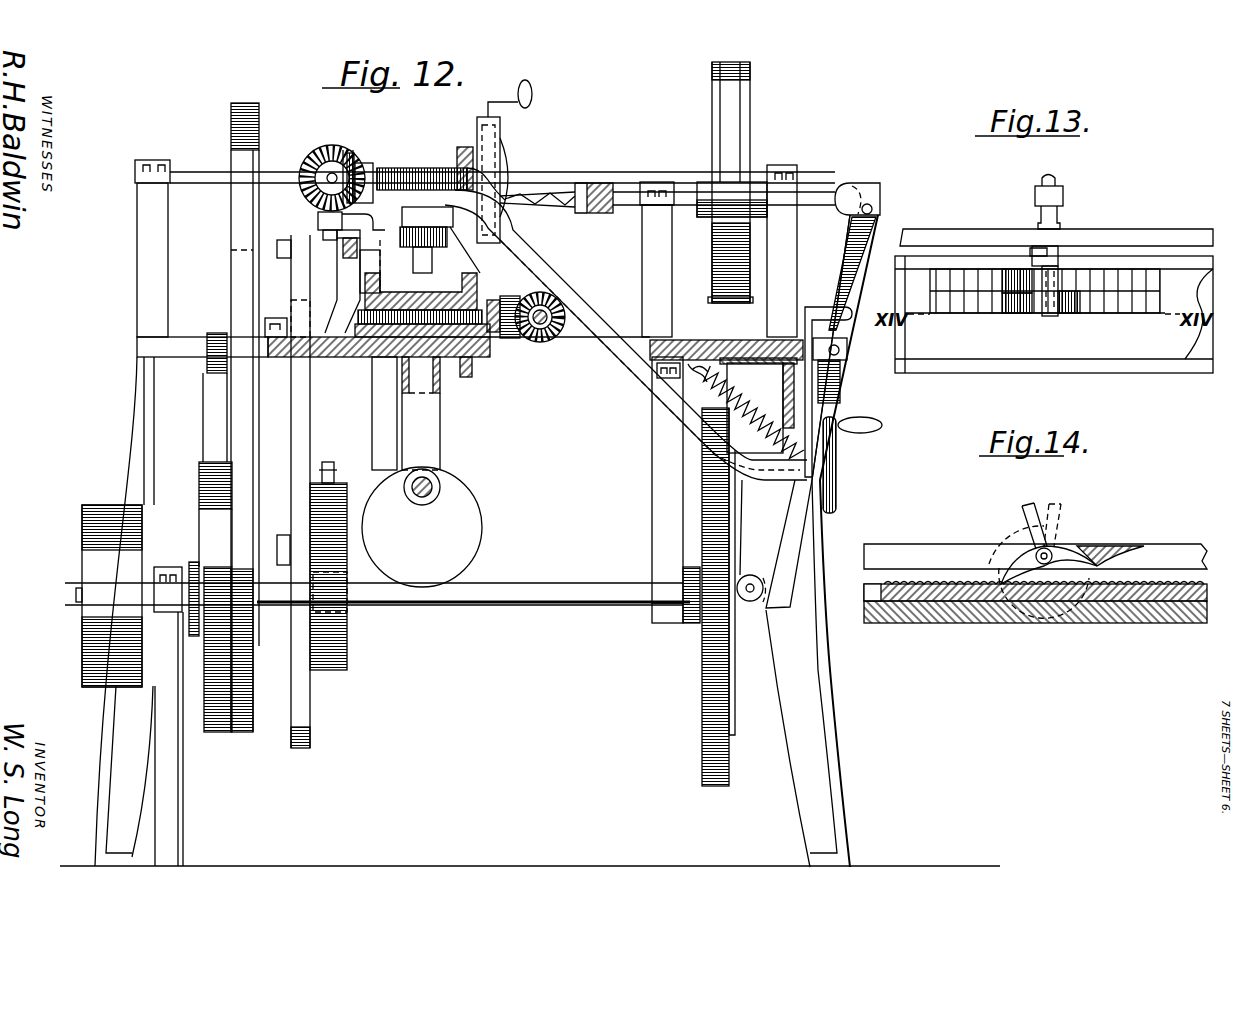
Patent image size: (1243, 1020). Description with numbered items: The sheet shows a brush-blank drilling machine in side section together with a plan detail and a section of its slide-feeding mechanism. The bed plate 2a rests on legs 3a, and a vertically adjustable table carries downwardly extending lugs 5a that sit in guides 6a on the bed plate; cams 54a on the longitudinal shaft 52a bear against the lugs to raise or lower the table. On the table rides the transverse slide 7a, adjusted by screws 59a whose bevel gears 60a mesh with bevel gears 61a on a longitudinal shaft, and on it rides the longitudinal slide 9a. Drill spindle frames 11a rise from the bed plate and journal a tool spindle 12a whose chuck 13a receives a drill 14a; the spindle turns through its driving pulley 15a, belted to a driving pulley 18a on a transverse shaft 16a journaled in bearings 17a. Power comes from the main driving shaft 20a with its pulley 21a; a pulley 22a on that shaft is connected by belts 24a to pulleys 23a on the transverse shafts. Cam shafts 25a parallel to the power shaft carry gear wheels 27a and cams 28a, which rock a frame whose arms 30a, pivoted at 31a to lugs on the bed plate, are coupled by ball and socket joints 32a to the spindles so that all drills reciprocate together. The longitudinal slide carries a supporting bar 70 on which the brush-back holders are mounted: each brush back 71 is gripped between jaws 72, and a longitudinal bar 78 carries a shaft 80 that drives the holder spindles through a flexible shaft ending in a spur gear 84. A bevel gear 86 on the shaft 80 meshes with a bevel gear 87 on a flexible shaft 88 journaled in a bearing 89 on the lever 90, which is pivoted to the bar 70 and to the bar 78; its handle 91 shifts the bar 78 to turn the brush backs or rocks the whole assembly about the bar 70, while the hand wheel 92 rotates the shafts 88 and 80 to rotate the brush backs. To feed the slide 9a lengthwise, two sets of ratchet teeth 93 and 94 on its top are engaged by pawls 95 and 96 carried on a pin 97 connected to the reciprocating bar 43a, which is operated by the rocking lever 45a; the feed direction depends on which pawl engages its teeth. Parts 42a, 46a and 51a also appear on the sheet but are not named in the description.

In FIG. 12, the bed plate 2a is at (145, 350).
In FIG. 12, the legs 3a is at (132, 478).
In FIG. 12, the lugs 5a is at (432, 427).
In FIG. 12, the guides 6a is at (440, 390).
In FIG. 12, the transverse slide 7a is at (478, 287).
In FIG. 13, the transverse slide 7a is at (1113, 352).
In FIG. 14, the transverse slide 7a is at (992, 600).
In FIG. 12, the longitudinal slide 9a is at (457, 277).
In FIG. 13, the longitudinal slide 9a is at (1035, 332).
In FIG. 14, the longitudinal slide 9a is at (913, 600).
In FIG. 12, the drill spindle frames 11a is at (648, 270).
In FIG. 12, the tool spindle 12a is at (818, 210).
In FIG. 12, the chuck 13a is at (605, 213).
In FIG. 12, the drill 14a is at (545, 200).
In FIG. 12, the driving pulley 15a is at (700, 212).
In FIG. 12, the transverse shaft 16a is at (617, 163).
In FIG. 12, the bearings 17a is at (140, 268).
In FIG. 12, the driving pulley 18a is at (737, 127).
In FIG. 12, the main driving shaft 20a is at (76, 585).
In FIG. 12, the pulley 21a is at (112, 596).
In FIG. 12, the pulley 22a is at (208, 533).
In FIG. 12, the pulleys 23a is at (233, 128).
In FIG. 12, the belts 24a is at (212, 333).
In FIG. 12, the cam shafts 25a is at (517, 605).
In FIG. 12, the gear wheels 27a is at (710, 663).
In FIG. 12, the cams 28a is at (758, 520).
In FIG. 12, the arms 30a is at (843, 272).
In FIG. 12, the pivot 31a is at (840, 360).
In FIG. 12, the ball and socket joint 32a is at (847, 190).
In FIG. 12, the arm 42a is at (347, 292).
In FIG. 12, the reciprocating bar 43a is at (342, 255).
In FIG. 13, the reciprocating bar 43a is at (1125, 222).
In FIG. 14, the reciprocating bar 43a is at (943, 538).
In FIG. 12, the rocking lever 45a is at (310, 430).
In FIG. 13, the rocking lever 45a is at (1058, 190).
In FIG. 12, the slot 46a is at (305, 327).
In FIG. 12, the bolt 51a is at (325, 470).
In FIG. 12, the longitudinal shaft 52a is at (420, 503).
In FIG. 12, the cams 54a is at (422, 527).
In FIG. 12, the screws 59a is at (490, 313).
In FIG. 12, the bevel gears 60a is at (510, 343).
In FIG. 12, the bevel gears 61a is at (545, 340).
In FIG. 12, the supporting bar 70 is at (415, 217).
In FIG. 12, the brush back 71 is at (512, 165).
In FIG. 12, the jaws 72 is at (500, 135).
In FIG. 12, the longitudinal bar 78 is at (318, 222).
In FIG. 12, the longitudinal shaft 80 is at (327, 175).
In FIG. 12, the spur gear 84 is at (465, 147).
In FIG. 12, the bevel gear 86 is at (322, 160).
In FIG. 12, the bevel gear 87 is at (352, 153).
In FIG. 12, the flexible shaft 88 is at (385, 168).
In FIG. 12, the bearing 89 is at (413, 187).
In FIG. 12, the lever 90 is at (642, 392).
In FIG. 12, the handle 91 is at (812, 398).
In FIG. 12, the hand wheel 92 is at (836, 457).
In FIG. 13, the ratchet teeth 93 is at (965, 283).
In FIG. 13, the ratchet teeth 94 is at (993, 300).
In FIG. 12, the pawl 95 is at (380, 254).
In FIG. 13, the pawl 95 is at (1020, 280).
In FIG. 14, the pawl 95 is at (1012, 548).
In FIG. 13, the pawl 96 is at (1063, 308).
In FIG. 14, the pawl 96 is at (1090, 548).
In FIG. 13, the pin 97 is at (1042, 310).
In FIG. 14, the pin 97 is at (1046, 550).